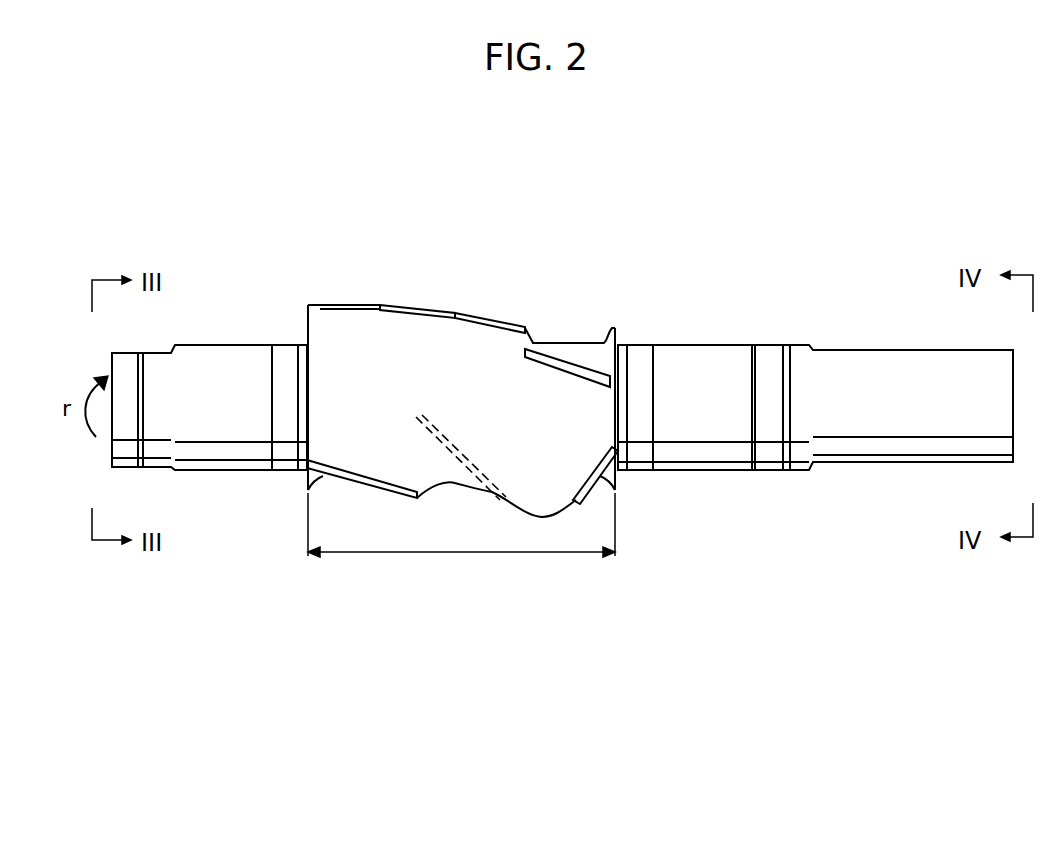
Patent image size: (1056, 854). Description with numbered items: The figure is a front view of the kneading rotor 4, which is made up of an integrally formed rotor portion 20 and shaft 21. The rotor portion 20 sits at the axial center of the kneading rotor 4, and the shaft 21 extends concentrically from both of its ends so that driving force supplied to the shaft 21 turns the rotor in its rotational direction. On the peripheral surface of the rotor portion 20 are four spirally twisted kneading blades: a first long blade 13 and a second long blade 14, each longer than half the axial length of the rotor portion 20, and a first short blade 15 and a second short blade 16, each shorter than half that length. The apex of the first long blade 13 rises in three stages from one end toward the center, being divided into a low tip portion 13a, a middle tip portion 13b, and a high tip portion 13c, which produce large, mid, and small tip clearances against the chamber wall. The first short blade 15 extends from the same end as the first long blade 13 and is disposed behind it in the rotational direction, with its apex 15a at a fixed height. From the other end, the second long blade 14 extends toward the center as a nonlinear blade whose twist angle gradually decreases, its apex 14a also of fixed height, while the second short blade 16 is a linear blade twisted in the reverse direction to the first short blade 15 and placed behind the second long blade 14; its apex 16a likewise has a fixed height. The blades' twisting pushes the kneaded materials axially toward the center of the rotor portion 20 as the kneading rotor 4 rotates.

The kneading rotor 4 is at (784, 251).
The first long blade 13 is at (458, 287).
The low tip portion 13a is at (350, 303).
The middle tip portion 13b is at (400, 305).
The high tip portion 13c is at (492, 318).
The second long blade 14 is at (573, 494).
The apex of the second long blade 14a is at (577, 497).
The first short blade 15 is at (343, 467).
The apex of the first short blade 15a is at (363, 481).
The second short blade 16 is at (580, 366).
The apex of the second short blade 16a is at (572, 363).
The rotor portion 20 is at (306, 318).
The shaft 21 is at (694, 343).